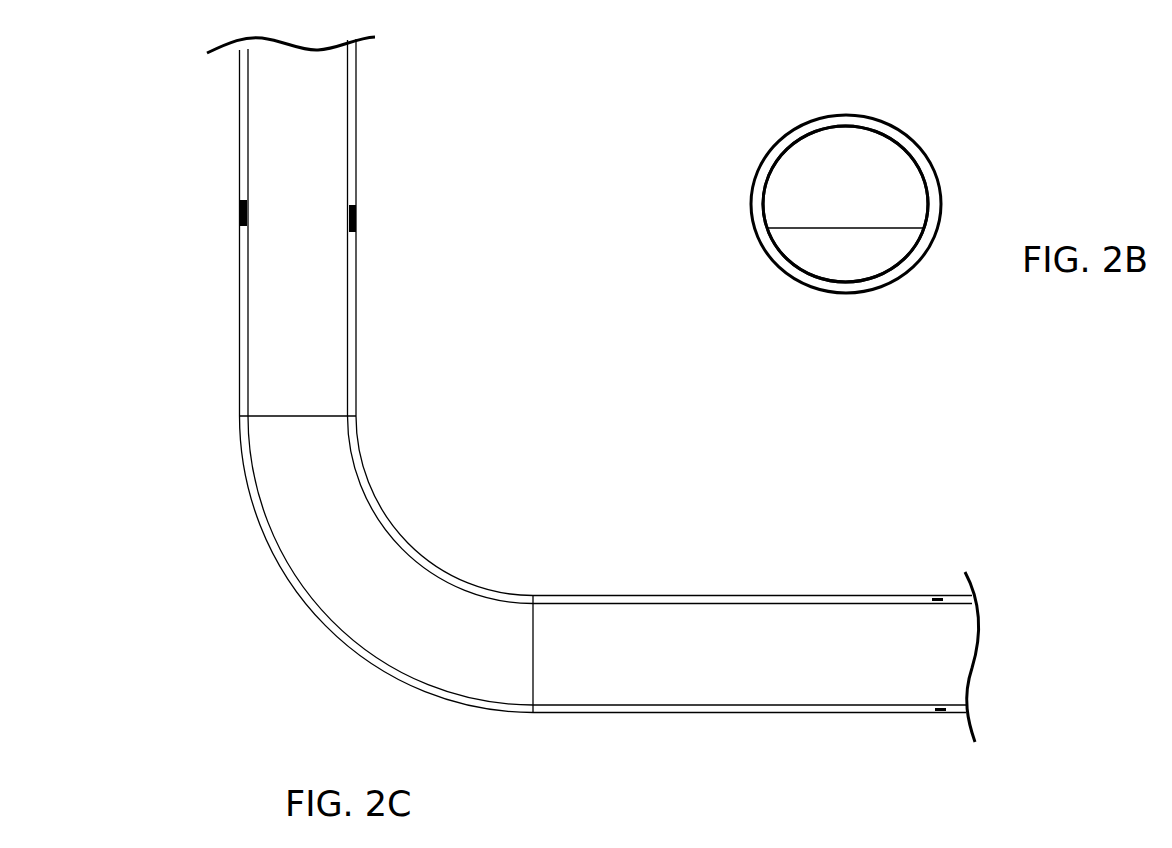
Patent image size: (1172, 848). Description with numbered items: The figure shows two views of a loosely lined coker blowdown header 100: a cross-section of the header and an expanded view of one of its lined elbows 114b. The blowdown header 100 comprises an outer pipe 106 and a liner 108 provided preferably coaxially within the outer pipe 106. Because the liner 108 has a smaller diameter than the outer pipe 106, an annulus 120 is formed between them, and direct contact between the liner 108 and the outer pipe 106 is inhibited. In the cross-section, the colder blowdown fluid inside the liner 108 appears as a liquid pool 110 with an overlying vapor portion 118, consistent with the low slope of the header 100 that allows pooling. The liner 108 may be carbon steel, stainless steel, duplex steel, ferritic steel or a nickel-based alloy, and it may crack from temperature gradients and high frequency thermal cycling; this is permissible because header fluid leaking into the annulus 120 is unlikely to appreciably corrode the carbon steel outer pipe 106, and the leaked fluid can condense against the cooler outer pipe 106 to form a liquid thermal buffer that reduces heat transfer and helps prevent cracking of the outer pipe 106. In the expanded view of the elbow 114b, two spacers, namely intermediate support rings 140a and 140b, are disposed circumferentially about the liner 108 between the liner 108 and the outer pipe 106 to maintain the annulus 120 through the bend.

In FIG. 2B, the blowdown header 100 is at (804, 106).
In FIG. 2C, the outer pipe 106 is at (567, 595).
In FIG. 2B, the outer pipe 106 is at (752, 203).
In FIG. 2C, the liner 108 is at (347, 310).
In FIG. 2B, the liner 108 is at (845, 280).
In FIG. 2B, the liquid pool 110 is at (880, 257).
In FIG. 2B, the vapor portion 118 is at (883, 212).
In FIG. 2C, the annulus 120 is at (242, 445).
In FIG. 2B, the annulus 120 is at (808, 275).
In FIG. 2C, the elbow 114b is at (436, 504).
In FIG. 2C, the intermediate support ring 140a is at (357, 218).
In FIG. 2C, the intermediate support ring 140b is at (938, 600).